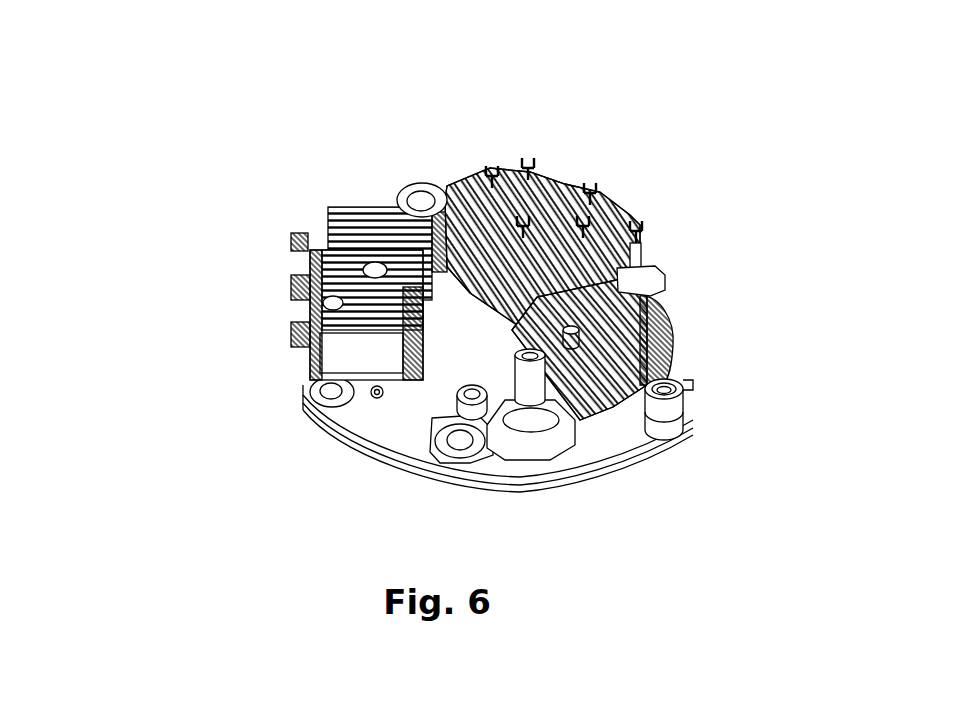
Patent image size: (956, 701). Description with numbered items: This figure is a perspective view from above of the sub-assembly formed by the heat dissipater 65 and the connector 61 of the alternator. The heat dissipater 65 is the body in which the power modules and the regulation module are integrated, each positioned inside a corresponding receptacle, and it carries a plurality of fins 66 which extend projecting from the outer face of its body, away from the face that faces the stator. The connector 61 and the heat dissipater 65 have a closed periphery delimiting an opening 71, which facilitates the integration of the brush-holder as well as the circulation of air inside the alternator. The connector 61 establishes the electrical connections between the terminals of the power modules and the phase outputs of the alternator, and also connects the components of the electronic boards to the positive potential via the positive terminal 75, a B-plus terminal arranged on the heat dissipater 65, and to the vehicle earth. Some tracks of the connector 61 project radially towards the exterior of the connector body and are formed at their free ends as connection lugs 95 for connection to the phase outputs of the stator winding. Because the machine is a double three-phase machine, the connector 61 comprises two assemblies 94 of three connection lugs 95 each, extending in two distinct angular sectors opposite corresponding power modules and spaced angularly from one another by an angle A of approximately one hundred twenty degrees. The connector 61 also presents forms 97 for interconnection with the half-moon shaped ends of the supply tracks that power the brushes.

The angle A is at (467, 127).
The connector 61 is at (343, 456).
The heat dissipater 65 is at (663, 278).
The fins 66 is at (658, 337).
The opening 71 is at (438, 387).
The positive terminal 75 is at (587, 447).
The assemblies of connection lugs 94 is at (562, 135).
The connection lugs 95 is at (543, 168).
The interconnection forms 97 is at (491, 474).